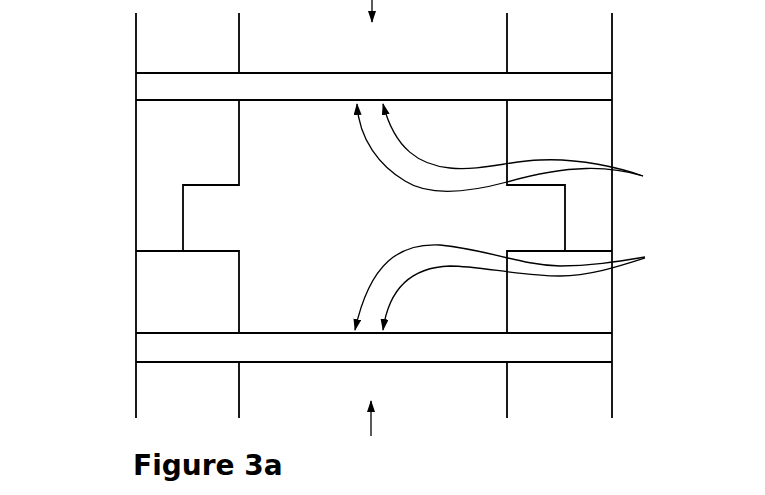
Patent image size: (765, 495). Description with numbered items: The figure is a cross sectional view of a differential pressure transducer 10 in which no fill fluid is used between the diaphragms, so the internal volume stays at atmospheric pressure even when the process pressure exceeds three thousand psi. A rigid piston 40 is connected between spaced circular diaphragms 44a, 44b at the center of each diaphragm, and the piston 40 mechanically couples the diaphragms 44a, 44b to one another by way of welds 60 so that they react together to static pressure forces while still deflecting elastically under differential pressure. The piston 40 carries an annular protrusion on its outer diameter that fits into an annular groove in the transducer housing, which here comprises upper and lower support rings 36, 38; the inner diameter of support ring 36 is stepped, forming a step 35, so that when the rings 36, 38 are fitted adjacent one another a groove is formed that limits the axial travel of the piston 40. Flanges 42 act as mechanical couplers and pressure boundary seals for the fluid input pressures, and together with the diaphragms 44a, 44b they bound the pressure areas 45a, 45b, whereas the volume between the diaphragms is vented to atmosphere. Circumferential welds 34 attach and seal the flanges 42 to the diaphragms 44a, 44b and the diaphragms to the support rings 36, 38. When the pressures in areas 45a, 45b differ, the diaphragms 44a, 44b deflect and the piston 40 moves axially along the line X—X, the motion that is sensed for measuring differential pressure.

The transducer 10 is at (124, 34).
The circumferential welds 34 is at (134, 102).
The step 35 is at (142, 217).
The upper support ring 36 is at (168, 143).
The lower support ring 38 is at (171, 310).
The rigid piston 40 is at (358, 240).
The flanges 42 is at (176, 49).
The circular diaphragm 44a is at (152, 85).
The circular diaphragm 44b is at (150, 345).
The area 45a is at (357, 58).
The area 45b is at (354, 393).
The welds 60 is at (514, 217).